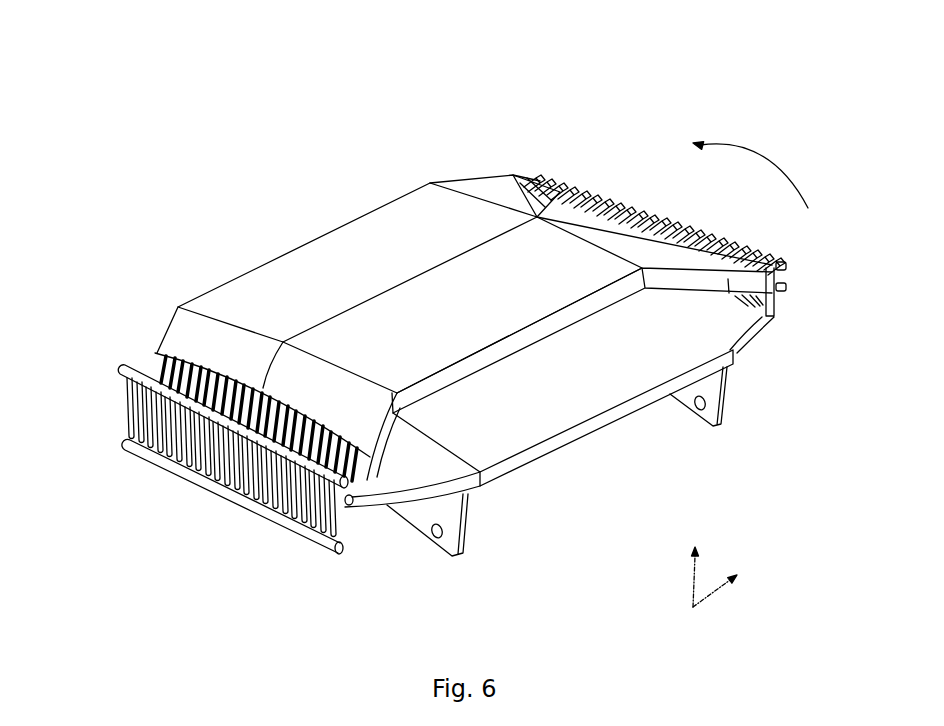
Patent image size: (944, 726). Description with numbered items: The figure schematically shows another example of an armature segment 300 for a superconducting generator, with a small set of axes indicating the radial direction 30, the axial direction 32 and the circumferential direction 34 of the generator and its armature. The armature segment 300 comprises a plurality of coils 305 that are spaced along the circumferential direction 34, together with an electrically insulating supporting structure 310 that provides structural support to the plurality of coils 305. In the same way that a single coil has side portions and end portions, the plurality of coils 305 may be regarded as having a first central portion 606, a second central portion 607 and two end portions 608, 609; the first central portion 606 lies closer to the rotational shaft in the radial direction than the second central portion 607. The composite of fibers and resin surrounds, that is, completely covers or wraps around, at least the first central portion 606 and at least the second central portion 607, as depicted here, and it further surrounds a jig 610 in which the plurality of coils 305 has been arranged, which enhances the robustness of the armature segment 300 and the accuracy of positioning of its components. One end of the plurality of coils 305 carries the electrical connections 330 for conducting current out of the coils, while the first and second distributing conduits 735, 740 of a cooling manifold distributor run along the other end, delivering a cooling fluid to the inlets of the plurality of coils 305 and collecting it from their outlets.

The armature segment 300 is at (165, 299).
The electrically insulating supporting structure 310 is at (503, 192).
The second central portion 607 is at (360, 255).
The plurality of coils end portion 609 is at (777, 243).
The electrical connections 330 is at (790, 290).
The second distributing conduit 740 is at (137, 378).
The first distributing conduit 735 is at (150, 450).
The plurality of coils end portion 608 is at (281, 549).
The first central portion 606 is at (543, 413).
The plurality of coils 305 is at (381, 537).
The jig 610 is at (712, 388).
The circumferential direction 34 is at (750, 174).
The radial direction 30 is at (678, 577).
The axial direction 32 is at (722, 595).